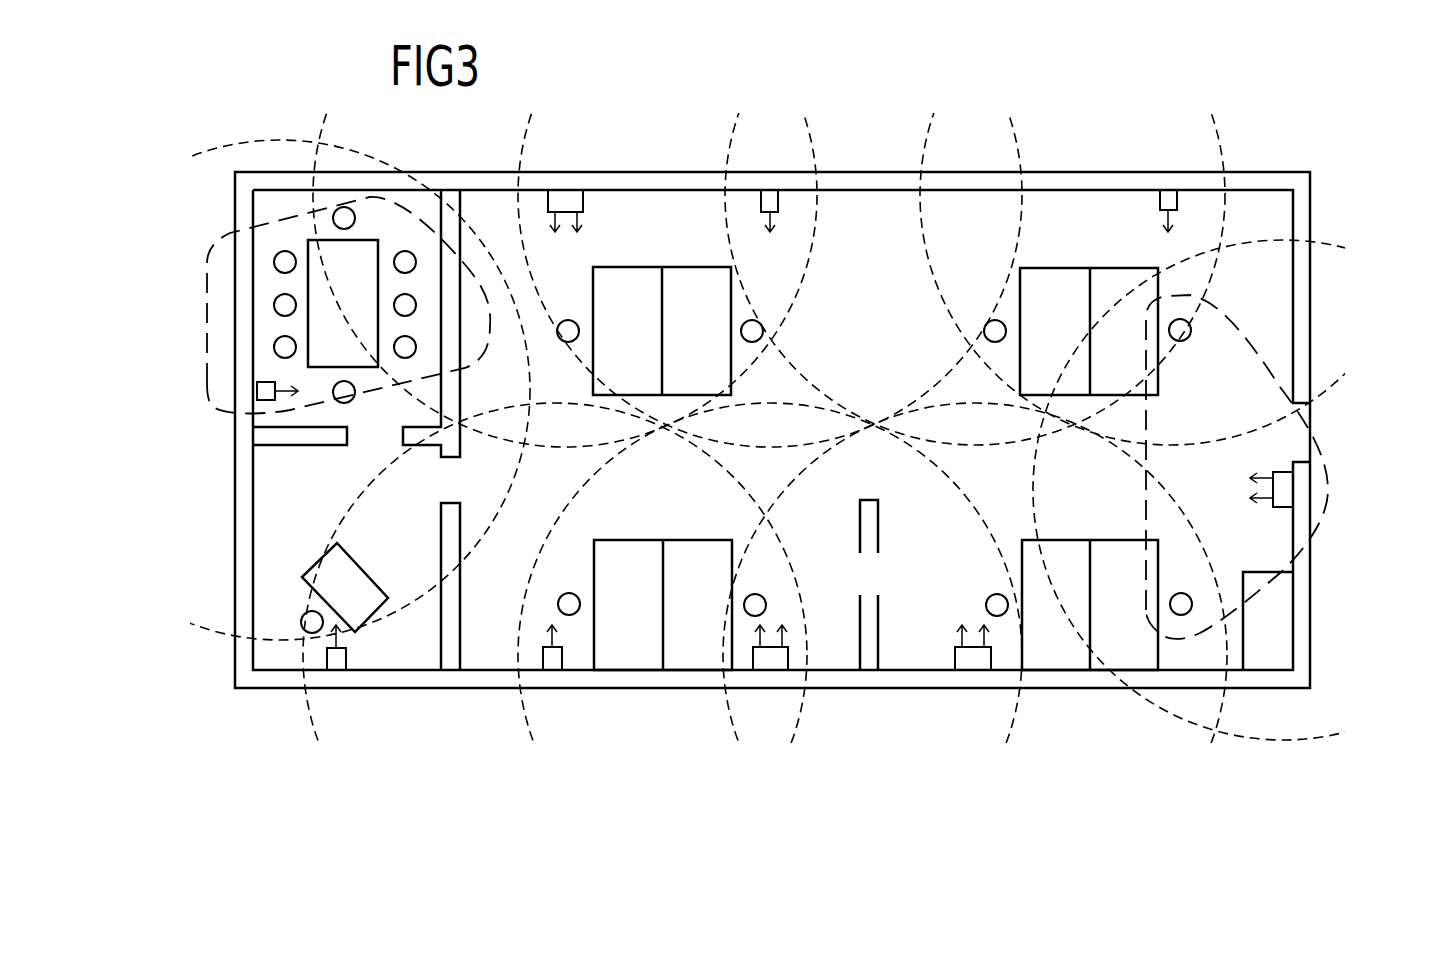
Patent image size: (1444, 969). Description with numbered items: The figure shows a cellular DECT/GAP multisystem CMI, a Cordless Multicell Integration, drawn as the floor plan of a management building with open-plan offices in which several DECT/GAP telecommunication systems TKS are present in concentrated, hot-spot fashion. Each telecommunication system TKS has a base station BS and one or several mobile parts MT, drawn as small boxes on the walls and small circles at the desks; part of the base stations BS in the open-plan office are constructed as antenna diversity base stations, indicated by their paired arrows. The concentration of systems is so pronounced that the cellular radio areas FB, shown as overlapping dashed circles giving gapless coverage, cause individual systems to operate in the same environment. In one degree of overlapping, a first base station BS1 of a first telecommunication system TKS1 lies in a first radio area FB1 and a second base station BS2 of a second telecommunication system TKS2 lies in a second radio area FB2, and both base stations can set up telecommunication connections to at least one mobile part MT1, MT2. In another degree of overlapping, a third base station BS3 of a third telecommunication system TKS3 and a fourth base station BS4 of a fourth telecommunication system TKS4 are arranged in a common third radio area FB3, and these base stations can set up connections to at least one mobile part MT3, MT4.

The cellular DECT/GAP multisystem (Cordless Multicell Integration) CMI is at (862, 168).
The base station BS is at (567, 200).
The first base station BS1 is at (1168, 200).
The second base station BS2 is at (1290, 490).
The third base station BS3 is at (975, 665).
The fourth base station BS4 is at (773, 665).
The mobile part MT is at (568, 320).
The mobile part MT1 is at (1223, 382).
The mobile part MT2 is at (1180, 341).
The mobile part MT3 is at (762, 600).
The mobile part MT4 is at (990, 598).
The cellular DECT/GAP radio area FB is at (323, 112).
The first radio area FB1 is at (1325, 388).
The second radio area FB2 is at (1328, 743).
The common third radio area FB3 is at (1215, 742).
The DECT/GAP system (telecommunication system) TKS is at (207, 293).
The first telecommunication system TKS1 is at (918, 162).
The second telecommunication system TKS2 is at (1270, 232).
The third telecommunication system TKS3 is at (1220, 740).
The fourth telecommunication system TKS4 is at (1030, 698).